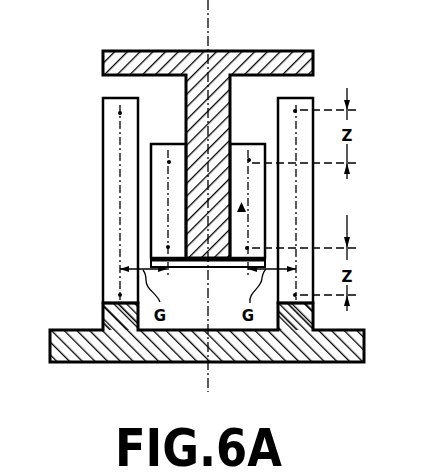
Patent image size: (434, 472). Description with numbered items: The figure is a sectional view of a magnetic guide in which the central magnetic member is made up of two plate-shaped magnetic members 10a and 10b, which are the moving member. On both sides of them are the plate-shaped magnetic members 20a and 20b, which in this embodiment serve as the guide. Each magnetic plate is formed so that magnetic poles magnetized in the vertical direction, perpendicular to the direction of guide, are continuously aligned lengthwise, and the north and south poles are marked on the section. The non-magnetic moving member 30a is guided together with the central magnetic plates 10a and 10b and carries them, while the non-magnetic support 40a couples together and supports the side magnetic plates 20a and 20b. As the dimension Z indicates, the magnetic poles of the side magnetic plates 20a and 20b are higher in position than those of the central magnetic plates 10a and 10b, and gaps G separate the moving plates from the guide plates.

The plate-shaped magnetic member 10a is at (166, 144).
The plate-shaped magnetic member 10b is at (240, 144).
The plate-shaped magnetic member 20a is at (106, 199).
The plate-shaped magnetic member 20b is at (306, 194).
The non-magnetic moving member 30a is at (284, 51).
The non-magnetic support 40a is at (308, 361).